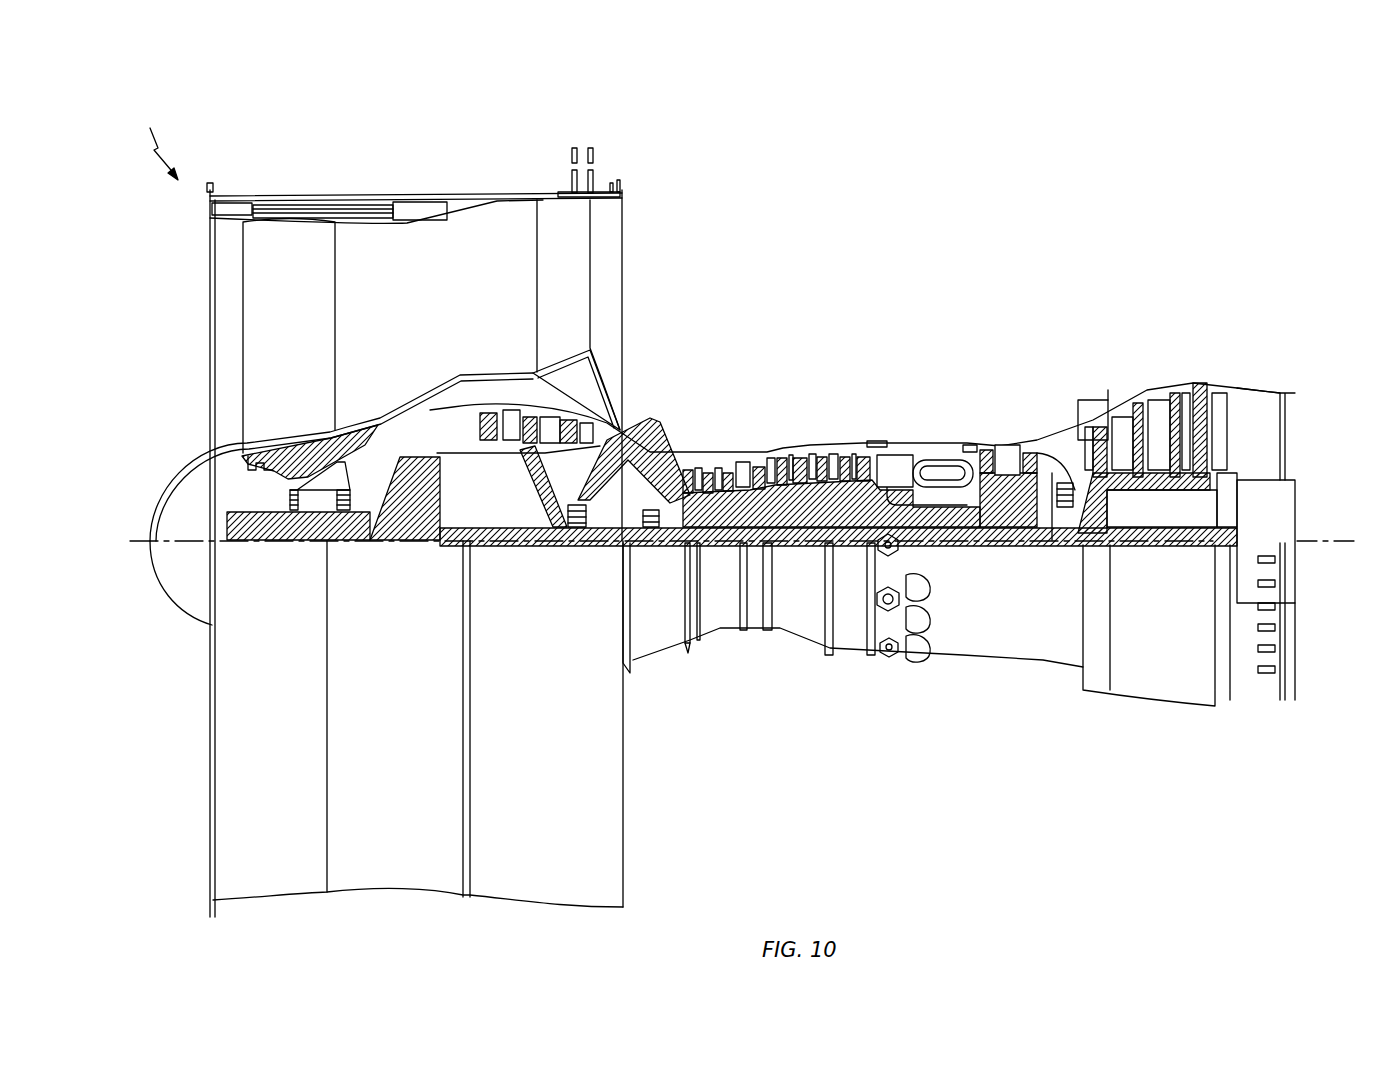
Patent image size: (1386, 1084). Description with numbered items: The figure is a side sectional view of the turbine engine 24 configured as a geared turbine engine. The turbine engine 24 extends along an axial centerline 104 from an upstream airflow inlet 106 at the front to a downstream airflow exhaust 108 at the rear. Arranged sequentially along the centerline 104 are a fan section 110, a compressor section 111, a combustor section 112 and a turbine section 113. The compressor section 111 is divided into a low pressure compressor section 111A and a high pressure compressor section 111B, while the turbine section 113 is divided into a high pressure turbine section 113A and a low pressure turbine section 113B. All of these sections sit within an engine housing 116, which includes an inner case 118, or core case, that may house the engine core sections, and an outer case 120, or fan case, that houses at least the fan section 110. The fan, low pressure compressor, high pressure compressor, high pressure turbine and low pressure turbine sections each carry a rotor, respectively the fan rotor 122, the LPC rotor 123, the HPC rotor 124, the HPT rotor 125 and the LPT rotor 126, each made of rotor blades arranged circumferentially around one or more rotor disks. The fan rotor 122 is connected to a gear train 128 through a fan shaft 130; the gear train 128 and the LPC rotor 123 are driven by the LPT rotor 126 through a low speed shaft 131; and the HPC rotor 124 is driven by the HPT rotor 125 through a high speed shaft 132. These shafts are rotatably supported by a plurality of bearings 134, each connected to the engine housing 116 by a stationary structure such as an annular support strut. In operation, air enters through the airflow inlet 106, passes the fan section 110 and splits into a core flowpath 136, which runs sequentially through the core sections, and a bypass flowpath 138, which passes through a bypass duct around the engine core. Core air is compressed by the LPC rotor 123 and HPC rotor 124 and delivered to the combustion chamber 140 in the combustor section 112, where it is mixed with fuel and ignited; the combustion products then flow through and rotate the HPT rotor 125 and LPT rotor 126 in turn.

The turbine engine 24 is at (144, 141).
The axial centerline 104 is at (1352, 547).
The upstream airflow inlet 106 is at (210, 272).
The downstream airflow exhaust 108 is at (1290, 430).
The fan section 110 is at (380, 165).
The compressor section 111 is at (851, 100).
The low pressure compressor (LPC) section 111A is at (622, 150).
The high pressure compressor (HPC) section 111B is at (848, 362).
The combustor section 112 is at (974, 362).
The turbine section 113 is at (1243, 285).
The high pressure turbine (HPT) section 113A is at (1057, 362).
The low pressure turbine (LPT) section 113B is at (1243, 362).
The engine housing 116 is at (655, 682).
The inner case 118 is at (847, 652).
The outer case 120 is at (577, 908).
The fan rotor 122 is at (240, 458).
The LPC rotor 123 is at (527, 485).
The HPC rotor 124 is at (793, 503).
The HPT rotor 125 is at (1003, 517).
The LPT rotor 126 is at (1153, 480).
The gear train 128 is at (420, 548).
The fan shaft 130 is at (278, 548).
The low speed shaft 131 is at (1165, 548).
The high speed shaft 132 is at (940, 527).
The bearings 134 is at (300, 547).
The core flowpath 136 is at (650, 458).
The bypass flowpath 138 is at (468, 303).
The combustion chamber 140 is at (932, 470).